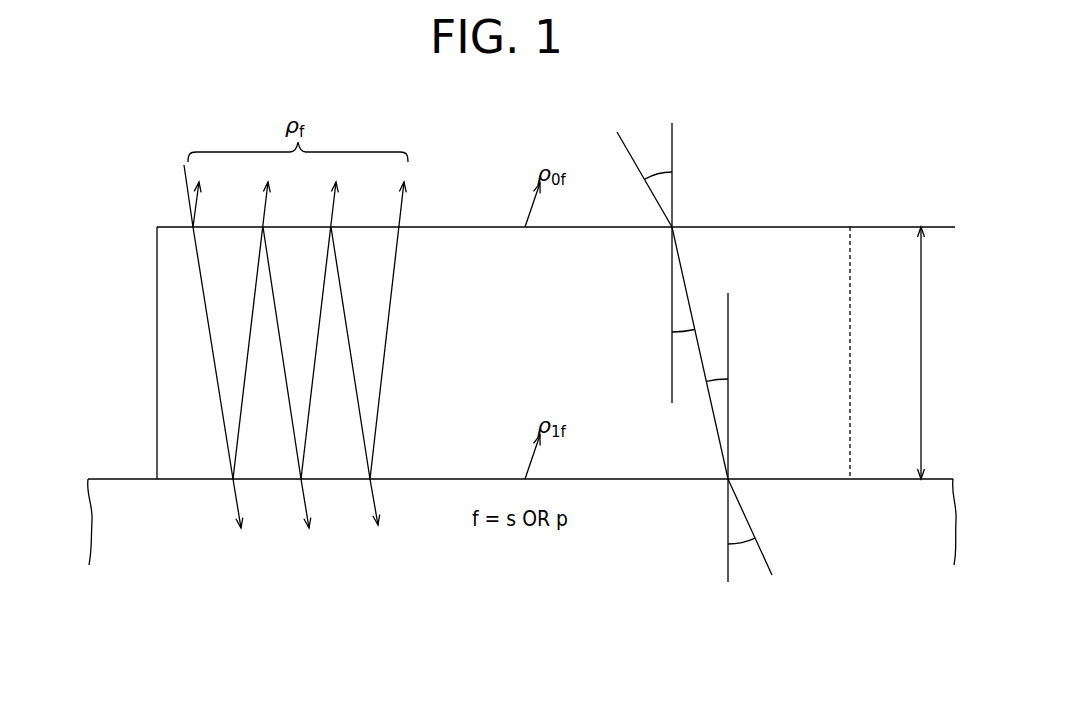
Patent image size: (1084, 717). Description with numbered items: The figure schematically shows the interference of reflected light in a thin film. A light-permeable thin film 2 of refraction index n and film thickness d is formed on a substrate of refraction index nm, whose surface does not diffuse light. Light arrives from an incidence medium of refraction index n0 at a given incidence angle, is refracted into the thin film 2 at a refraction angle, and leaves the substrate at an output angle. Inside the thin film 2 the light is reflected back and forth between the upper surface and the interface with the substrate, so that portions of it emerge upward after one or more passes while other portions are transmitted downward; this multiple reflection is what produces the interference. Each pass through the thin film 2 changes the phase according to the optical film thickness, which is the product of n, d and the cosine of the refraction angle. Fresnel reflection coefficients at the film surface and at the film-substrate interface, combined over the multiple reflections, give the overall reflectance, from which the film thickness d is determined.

The thin film 2 is at (185, 388).
The film thickness d is at (929, 353).
The refraction index of the thin film n is at (837, 353).
The refraction index of the incidence medium n0 is at (812, 207).
The refraction index of the substrate nm is at (814, 499).